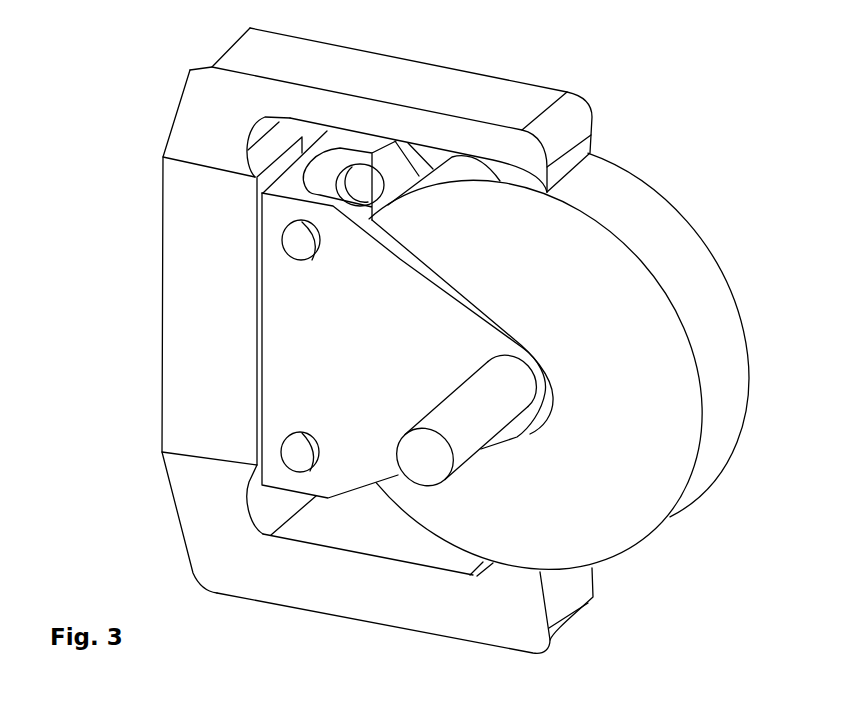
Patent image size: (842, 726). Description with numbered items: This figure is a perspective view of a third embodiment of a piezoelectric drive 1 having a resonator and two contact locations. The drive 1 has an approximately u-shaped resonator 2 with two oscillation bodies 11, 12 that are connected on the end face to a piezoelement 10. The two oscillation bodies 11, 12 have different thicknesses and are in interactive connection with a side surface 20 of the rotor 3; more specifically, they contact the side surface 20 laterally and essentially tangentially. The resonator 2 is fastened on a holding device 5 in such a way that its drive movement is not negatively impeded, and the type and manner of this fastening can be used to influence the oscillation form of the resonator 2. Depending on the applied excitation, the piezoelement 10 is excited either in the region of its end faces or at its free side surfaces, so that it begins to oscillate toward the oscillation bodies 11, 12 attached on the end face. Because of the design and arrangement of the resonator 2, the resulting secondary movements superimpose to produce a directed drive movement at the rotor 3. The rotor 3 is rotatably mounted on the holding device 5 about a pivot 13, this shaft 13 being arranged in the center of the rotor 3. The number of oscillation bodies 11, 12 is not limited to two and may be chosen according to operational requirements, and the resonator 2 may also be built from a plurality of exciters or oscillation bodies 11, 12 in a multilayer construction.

The drive 1 is at (104, 164).
The resonator 2 is at (110, 325).
The rotor 3 is at (636, 365).
The holding device 5 is at (344, 356).
The piezoelement 10 is at (221, 321).
The oscillation body 11 is at (455, 618).
The oscillation body 12 is at (513, 90).
The pivot 13 is at (472, 432).
The side surface 20 is at (657, 242).